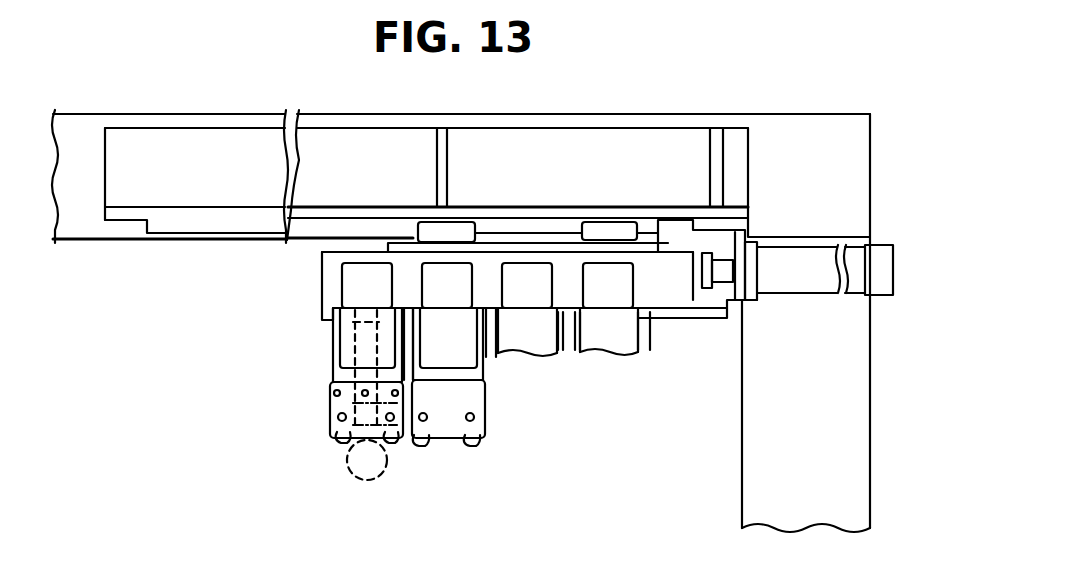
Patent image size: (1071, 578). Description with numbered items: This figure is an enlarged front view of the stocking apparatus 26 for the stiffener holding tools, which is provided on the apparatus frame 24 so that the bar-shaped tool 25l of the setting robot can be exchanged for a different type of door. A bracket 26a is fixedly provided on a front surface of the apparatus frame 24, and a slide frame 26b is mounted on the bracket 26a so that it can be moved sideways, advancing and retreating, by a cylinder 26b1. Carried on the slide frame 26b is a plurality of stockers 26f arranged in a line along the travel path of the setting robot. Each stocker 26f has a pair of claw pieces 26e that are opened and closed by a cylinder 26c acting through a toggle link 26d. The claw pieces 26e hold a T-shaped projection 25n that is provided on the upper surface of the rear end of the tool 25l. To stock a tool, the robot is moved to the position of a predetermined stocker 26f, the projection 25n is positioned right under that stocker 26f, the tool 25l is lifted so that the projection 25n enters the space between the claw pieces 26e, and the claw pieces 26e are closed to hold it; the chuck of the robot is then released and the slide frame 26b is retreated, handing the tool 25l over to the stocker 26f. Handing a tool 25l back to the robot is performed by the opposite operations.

The apparatus frame 24 is at (352, 118).
The bracket 26a is at (556, 148).
The stocking apparatus 26 is at (753, 168).
The slide frame 26b is at (677, 293).
The cylinder 26b1 is at (807, 282).
The cylinder 26c is at (357, 288).
The toggle link 26d is at (328, 410).
The claw pieces 26e is at (348, 435).
The stockers 26f is at (323, 417).
The T-shaped projection 25n is at (343, 422).
The tool 25l is at (357, 478).